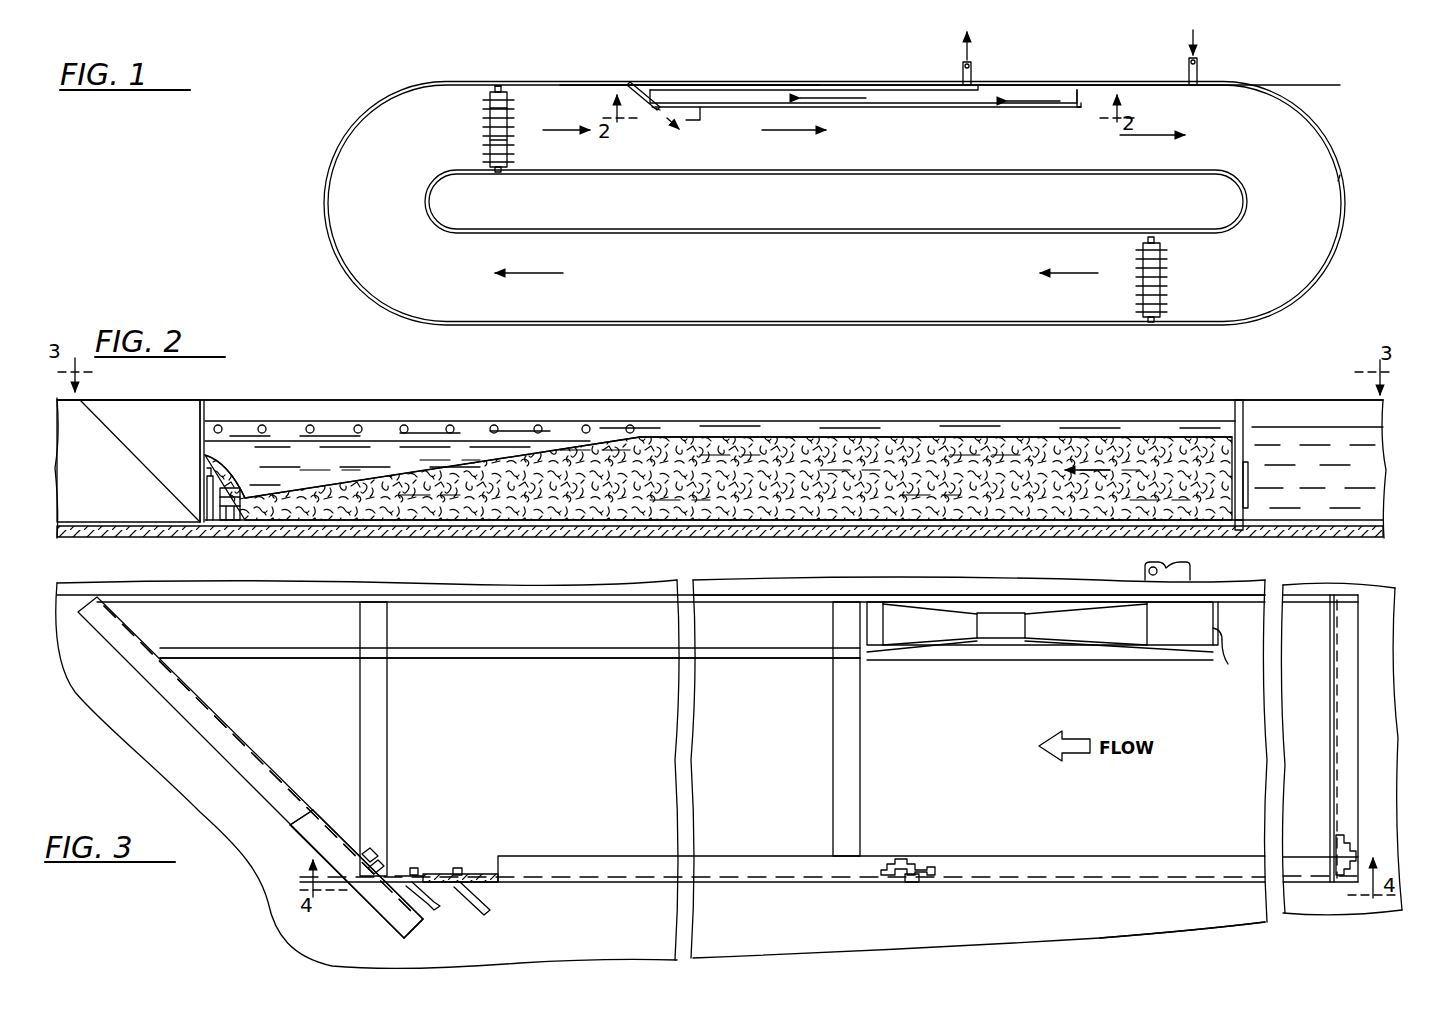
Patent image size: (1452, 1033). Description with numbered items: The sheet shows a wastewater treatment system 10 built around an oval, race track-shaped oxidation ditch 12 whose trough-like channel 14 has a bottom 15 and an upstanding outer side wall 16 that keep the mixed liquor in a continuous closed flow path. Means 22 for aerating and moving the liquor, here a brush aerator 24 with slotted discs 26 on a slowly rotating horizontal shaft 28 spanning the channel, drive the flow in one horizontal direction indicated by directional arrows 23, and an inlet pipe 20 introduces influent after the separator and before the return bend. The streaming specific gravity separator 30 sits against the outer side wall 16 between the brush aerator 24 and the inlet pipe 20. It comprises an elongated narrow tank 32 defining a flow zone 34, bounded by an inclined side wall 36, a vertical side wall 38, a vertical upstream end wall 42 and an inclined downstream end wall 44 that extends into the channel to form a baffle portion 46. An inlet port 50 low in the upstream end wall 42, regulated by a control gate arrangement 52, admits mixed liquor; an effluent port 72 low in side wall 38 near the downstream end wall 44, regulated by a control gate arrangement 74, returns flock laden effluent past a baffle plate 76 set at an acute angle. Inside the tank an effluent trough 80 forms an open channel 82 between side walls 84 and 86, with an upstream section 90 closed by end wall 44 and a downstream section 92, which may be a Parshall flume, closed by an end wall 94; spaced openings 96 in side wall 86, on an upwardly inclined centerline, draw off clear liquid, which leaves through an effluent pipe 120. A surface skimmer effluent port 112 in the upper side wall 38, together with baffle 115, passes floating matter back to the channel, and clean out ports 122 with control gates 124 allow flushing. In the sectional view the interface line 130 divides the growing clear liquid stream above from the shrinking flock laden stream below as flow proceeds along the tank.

In FIG. 1, the wastewater treatment system 10 is at (1295, 88).
In FIG. 1, the oxidation ditch 12 is at (1343, 180).
In FIG. 1, the channel 14 is at (836, 224).
In FIG. 3, the channel 14 is at (990, 913).
In FIG. 3, the bottom 15 is at (1232, 922).
In FIG. 1, the outer side wall 16 is at (607, 82).
In FIG. 2, the outer side wall 16 is at (1314, 412).
In FIG. 3, the outer side wall 16 is at (510, 580).
In FIG. 1, the inlet pipe 20 is at (1200, 72).
In FIG. 1, the means for aerating and moving 22 is at (516, 100).
In FIG. 1, the directional arrows 23 is at (565, 130).
In FIG. 1, the brush aerator 24 is at (490, 110).
In FIG. 1, the slotted discs 26 is at (488, 140).
In FIG. 1, the horizontal shaft 28 is at (498, 93).
In FIG. 1, the streaming specific gravity separator 30 is at (792, 82).
In FIG. 2, the streaming specific gravity separator 30 is at (703, 396).
In FIG. 3, the streaming specific gravity separator 30 is at (1357, 582).
In FIG. 1, the tank 32 is at (916, 106).
In FIG. 3, the tank 32 is at (290, 750).
In FIG. 3, the flow zone 34 is at (734, 743).
In FIG. 3, the side wall 36 is at (775, 600).
In FIG. 2, the side wall 38 is at (607, 525).
In FIG. 3, the side wall 38 is at (633, 882).
In FIG. 1, the upstream end wall 42 is at (1077, 95).
In FIG. 2, the upstream end wall 42 is at (1241, 432).
In FIG. 3, the upstream end wall 42 is at (1330, 703).
In FIG. 1, the downstream end wall 44 is at (645, 90).
In FIG. 2, the downstream end wall 44 is at (158, 443).
In FIG. 3, the downstream end wall 44 is at (312, 825).
In FIG. 1, the inclined baffle portion 46 is at (652, 108).
In FIG. 3, the inclined baffle portion 46 is at (395, 912).
In FIG. 2, the inlet port 50 is at (1244, 522).
In FIG. 2, the control gate arrangement 52 is at (1252, 474).
In FIG. 2, the effluent port 72 is at (232, 524).
In FIG. 3, the effluent port 72 is at (440, 888).
In FIG. 3, the control gate arrangement 74 is at (442, 870).
In FIG. 1, the baffle plate 76 is at (662, 108).
In FIG. 3, the baffle plate 76 is at (492, 912).
In FIG. 1, the effluent trough 80 is at (893, 90).
In FIG. 3, the effluent trough 80 is at (648, 606).
In FIG. 3, the open channel 82 is at (532, 618).
In FIG. 3, the side wall 84 is at (834, 602).
In FIG. 3, the side wall 86 is at (605, 653).
In FIG. 3, the upstream section 90 is at (290, 618).
In FIG. 3, the downstream section 92 is at (915, 620).
In FIG. 3, the end wall 94 is at (1230, 656).
In FIG. 2, the openings 96 is at (404, 424).
In FIG. 3, the surface skimmer effluent port 112 is at (412, 875).
In FIG. 3, the baffle 115 is at (418, 912).
In FIG. 1, the effluent pipe 120 is at (972, 74).
In FIG. 3, the effluent pipe 120 is at (1190, 570).
In FIG. 3, the clean out ports 122 is at (372, 888).
In FIG. 3, the control gates 124 is at (372, 860).
In FIG. 2, the interface line 130 is at (641, 437).